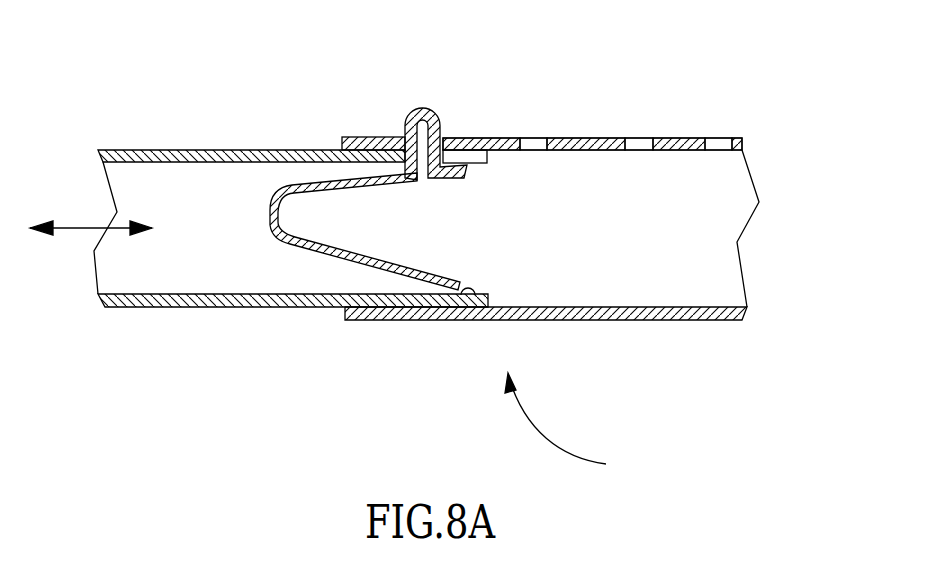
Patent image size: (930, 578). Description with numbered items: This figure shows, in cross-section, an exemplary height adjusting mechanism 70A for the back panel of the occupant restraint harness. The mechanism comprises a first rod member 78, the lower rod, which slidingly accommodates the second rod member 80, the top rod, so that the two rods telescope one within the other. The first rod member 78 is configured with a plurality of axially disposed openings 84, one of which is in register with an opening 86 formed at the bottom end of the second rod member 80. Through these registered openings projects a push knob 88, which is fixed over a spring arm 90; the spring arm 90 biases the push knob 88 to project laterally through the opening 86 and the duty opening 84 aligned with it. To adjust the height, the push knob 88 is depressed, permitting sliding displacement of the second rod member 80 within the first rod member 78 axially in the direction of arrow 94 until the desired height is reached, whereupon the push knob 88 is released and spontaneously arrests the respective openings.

The height adjusting mechanism 70A is at (580, 428).
The first rod member 78 is at (608, 320).
The second rod member 80 is at (230, 307).
The openings 84 is at (533, 140).
The opening 86 is at (403, 136).
The push knob 88 is at (432, 128).
The spring arm 90 is at (322, 257).
The arrow 94 is at (80, 228).